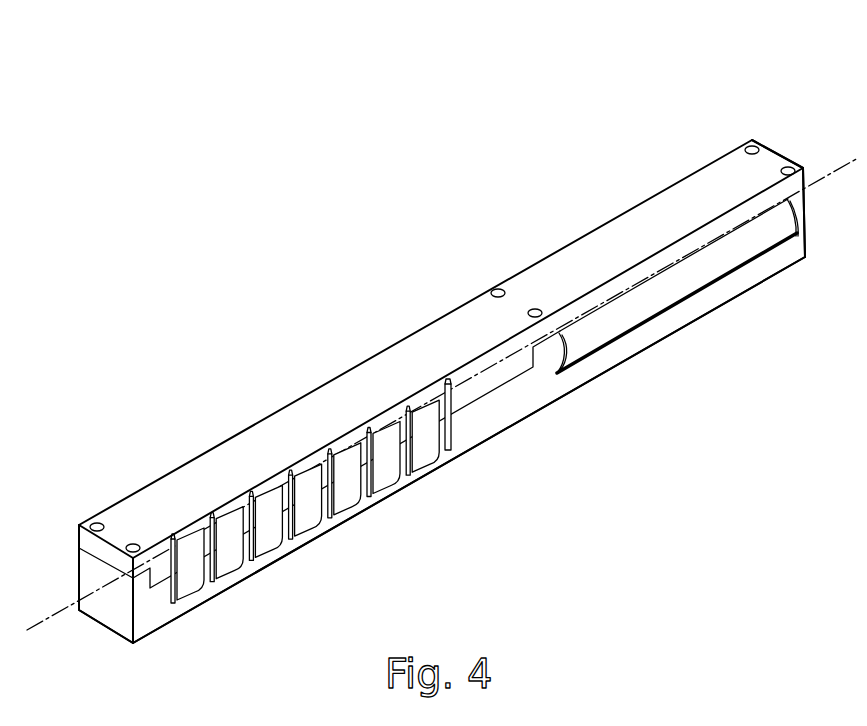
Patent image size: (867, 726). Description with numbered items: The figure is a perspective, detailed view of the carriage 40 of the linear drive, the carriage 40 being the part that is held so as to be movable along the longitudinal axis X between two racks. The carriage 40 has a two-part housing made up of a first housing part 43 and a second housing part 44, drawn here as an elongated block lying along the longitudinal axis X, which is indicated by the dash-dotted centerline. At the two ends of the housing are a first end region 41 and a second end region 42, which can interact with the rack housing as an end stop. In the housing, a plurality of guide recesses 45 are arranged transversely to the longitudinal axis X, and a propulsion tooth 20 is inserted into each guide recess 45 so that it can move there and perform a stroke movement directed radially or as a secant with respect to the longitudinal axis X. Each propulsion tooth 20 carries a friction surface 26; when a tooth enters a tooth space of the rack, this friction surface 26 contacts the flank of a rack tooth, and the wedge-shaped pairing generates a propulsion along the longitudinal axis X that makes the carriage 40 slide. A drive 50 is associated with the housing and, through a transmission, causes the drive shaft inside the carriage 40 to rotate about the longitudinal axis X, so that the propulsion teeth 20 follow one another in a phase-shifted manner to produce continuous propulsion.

The propulsion tooth 20 is at (281, 576).
The friction surface 26 is at (299, 492).
The carriage 40 is at (442, 350).
The first end region 41 is at (100, 579).
The second end region 42 is at (803, 170).
The first housing part 43 is at (513, 398).
The second housing part 44 is at (420, 352).
The guide recess 45 is at (343, 505).
The drive 50 is at (670, 300).
The longitudinal axis X is at (499, 362).